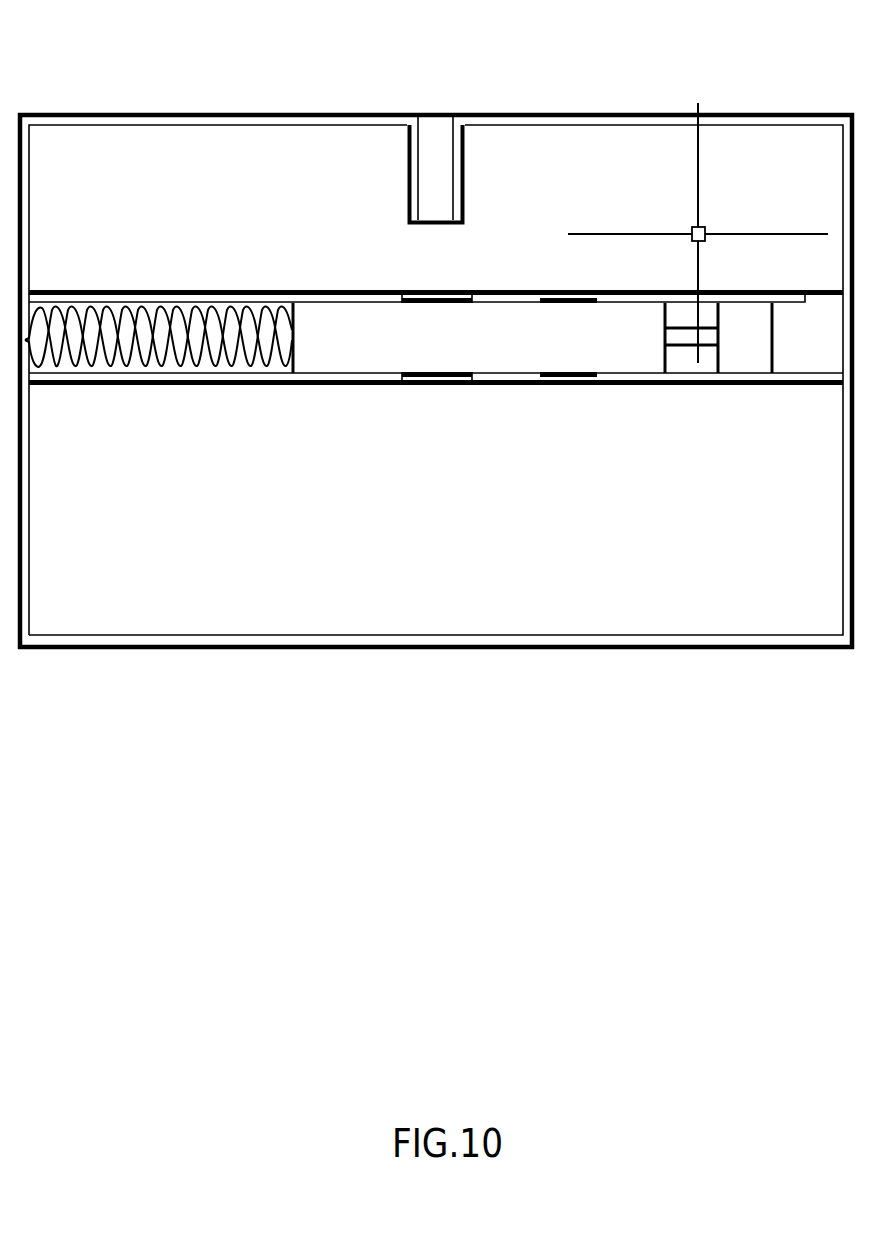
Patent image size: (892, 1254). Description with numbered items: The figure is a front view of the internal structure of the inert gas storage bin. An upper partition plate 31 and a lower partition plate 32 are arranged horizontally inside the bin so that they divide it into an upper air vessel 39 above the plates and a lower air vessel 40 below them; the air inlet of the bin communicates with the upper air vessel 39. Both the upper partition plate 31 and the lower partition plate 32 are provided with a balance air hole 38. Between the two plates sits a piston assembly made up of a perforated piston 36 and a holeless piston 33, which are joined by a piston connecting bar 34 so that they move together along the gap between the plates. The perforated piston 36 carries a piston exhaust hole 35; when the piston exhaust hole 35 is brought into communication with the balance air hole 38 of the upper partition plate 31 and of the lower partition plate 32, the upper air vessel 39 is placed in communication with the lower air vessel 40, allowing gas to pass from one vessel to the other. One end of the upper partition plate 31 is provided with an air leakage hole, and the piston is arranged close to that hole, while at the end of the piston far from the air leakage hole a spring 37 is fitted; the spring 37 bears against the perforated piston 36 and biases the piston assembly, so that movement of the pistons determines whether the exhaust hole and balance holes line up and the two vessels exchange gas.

The upper partition plate 31 is at (638, 298).
The lower partition plate 32 is at (824, 377).
The holeless piston 33 is at (750, 347).
The piston connecting bar 34 is at (690, 347).
The piston exhaust hole 35 is at (573, 303).
The perforated piston 36 is at (338, 345).
The spring 37 is at (158, 352).
The balance air hole 38 is at (435, 292).
The upper air vessel 39 is at (292, 207).
The lower air vessel 40 is at (246, 635).